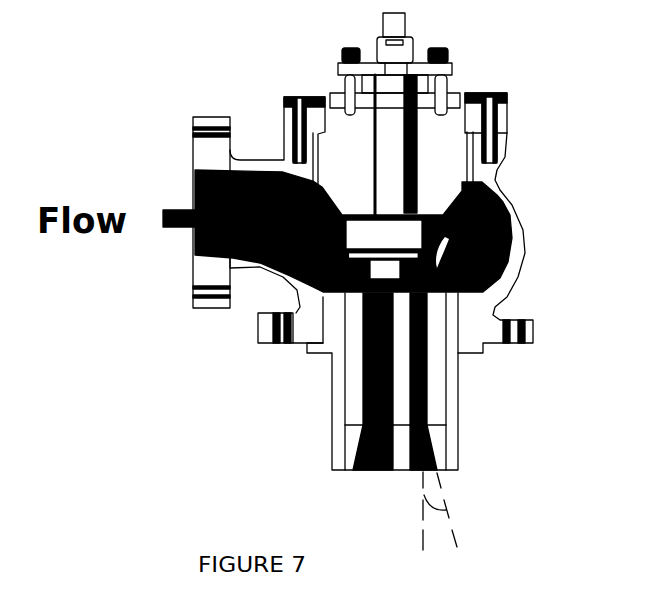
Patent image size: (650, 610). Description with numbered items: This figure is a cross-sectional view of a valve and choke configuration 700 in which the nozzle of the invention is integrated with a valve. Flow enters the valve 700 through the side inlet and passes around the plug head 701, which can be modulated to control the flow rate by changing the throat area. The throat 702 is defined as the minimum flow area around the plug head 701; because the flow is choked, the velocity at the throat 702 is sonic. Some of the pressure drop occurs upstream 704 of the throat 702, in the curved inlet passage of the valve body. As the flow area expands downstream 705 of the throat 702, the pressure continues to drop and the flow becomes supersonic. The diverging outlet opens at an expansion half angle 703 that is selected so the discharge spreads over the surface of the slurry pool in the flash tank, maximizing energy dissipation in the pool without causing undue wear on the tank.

The valve and choke configuration 700 is at (530, 180).
The plug head 701 is at (510, 228).
The throat 702 is at (512, 258).
The expansion (half) angle 703 is at (450, 513).
The upstream 704 is at (290, 270).
The downstream 705 is at (360, 440).